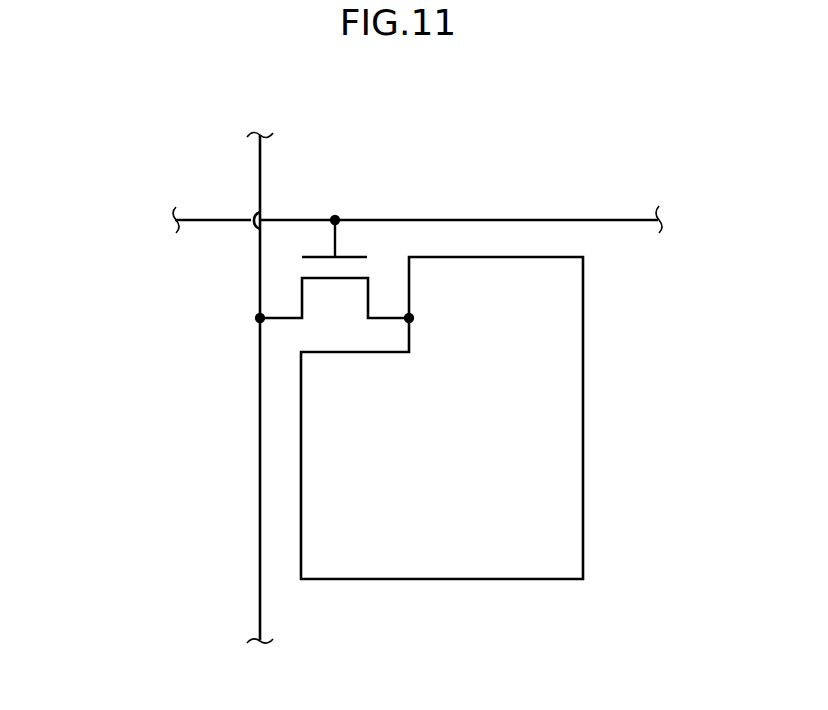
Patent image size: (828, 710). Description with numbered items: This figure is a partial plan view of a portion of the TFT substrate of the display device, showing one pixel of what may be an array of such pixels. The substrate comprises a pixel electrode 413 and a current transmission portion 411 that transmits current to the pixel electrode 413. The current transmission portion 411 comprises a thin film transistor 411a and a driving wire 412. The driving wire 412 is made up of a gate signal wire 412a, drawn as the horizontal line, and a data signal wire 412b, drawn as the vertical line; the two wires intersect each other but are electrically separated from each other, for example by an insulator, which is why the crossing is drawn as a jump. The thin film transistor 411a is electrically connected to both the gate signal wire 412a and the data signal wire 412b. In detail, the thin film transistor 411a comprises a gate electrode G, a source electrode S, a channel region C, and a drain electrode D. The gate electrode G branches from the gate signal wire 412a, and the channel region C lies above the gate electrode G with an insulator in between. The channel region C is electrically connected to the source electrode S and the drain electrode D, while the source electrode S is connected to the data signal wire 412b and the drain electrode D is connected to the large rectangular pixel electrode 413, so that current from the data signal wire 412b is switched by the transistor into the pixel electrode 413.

The current transmission portion 411 is at (118, 160).
The driving wire 412 is at (172, 140).
The gate signal wire 412a is at (213, 220).
The data signal wire 412b is at (260, 151).
The thin film transistor 411a is at (301, 253).
The pixel electrode 413 is at (567, 449).
The gate electrode G is at (335, 221).
The source electrode S is at (249, 320).
The drain electrode D is at (422, 322).
The channel region C is at (307, 267).